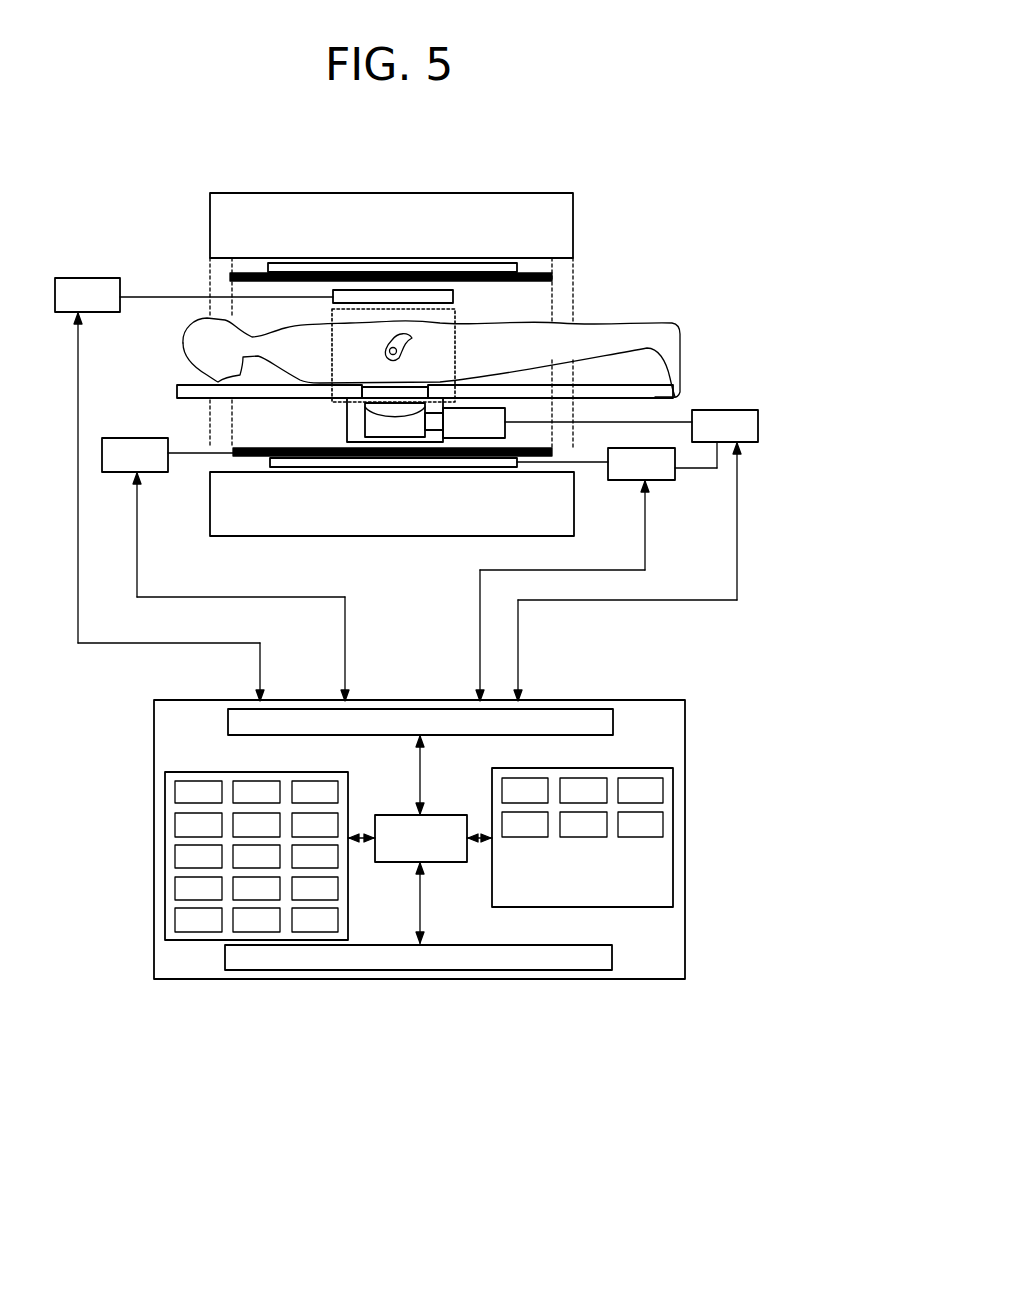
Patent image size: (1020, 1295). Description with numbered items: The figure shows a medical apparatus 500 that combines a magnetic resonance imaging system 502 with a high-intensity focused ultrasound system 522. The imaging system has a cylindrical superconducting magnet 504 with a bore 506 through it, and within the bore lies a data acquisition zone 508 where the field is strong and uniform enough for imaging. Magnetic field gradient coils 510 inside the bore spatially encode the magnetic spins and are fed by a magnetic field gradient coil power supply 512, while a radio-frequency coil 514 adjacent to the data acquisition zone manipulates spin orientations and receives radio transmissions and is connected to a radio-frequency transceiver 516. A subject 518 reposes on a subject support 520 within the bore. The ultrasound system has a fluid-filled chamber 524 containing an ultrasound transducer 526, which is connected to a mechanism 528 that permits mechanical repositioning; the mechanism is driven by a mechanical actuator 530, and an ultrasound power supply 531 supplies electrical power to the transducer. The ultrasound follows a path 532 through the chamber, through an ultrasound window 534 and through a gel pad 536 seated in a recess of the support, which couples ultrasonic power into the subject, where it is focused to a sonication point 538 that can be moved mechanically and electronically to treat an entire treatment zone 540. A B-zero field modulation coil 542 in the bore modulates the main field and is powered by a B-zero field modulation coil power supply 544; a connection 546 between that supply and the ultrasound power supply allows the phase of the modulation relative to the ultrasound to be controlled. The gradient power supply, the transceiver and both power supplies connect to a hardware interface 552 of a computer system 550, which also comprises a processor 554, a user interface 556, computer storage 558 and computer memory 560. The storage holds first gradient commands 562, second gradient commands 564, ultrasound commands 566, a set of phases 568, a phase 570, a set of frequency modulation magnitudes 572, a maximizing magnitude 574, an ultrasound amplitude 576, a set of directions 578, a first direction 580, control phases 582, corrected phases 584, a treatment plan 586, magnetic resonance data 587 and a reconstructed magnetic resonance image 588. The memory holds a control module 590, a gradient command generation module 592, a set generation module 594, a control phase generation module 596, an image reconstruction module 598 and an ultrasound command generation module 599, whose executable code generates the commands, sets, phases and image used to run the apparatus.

The medical apparatus 500 is at (763, 1013).
The magnetic resonance imaging system 502 is at (598, 136).
The magnet 504 is at (575, 212).
The bore 506 is at (618, 302).
The data acquisition zone 508 is at (362, 392).
The magnetic field gradient coils 510 is at (243, 456).
The magnetic field gradient coil power supply 512 is at (225, 569).
The radio-frequency coil 514 is at (372, 378).
The radio-frequency transceiver 516 is at (194, 489).
The subject 518 is at (183, 343).
The subject support 520 is at (177, 393).
The high-intensity focused ultrasound system 522 is at (316, 413).
The fluid-filled chamber 524 is at (360, 432).
The ultrasound transducer 526 is at (397, 425).
The mechanism 528 is at (435, 420).
The mechanical actuator 530 is at (465, 432).
The ultrasound power supply 531 is at (631, 555).
The ultrasound path 532 is at (378, 378).
The ultrasound window 534 is at (380, 408).
The gel pad 536 is at (403, 385).
The sonication point 538 is at (392, 348).
The treatment zone 540 is at (412, 378).
The B0 field modulation coil 542 is at (292, 467).
The B0 field modulation coil power supply 544 is at (596, 571).
The connection 546 is at (699, 478).
The computer system 550 is at (685, 728).
The hardware interface 552 is at (420, 722).
The processor 554 is at (420, 839).
The user interface 556 is at (418, 957).
The computer storage 558 is at (165, 816).
The computer memory 560 is at (673, 796).
The first gradient commands 562 is at (198, 792).
The second gradient commands 564 is at (256, 792).
The ultrasound commands 566 is at (315, 792).
The set of phases 568 is at (198, 825).
The phase 570 is at (256, 825).
The set of frequency modulation magnitudes 572 is at (315, 825).
The maximizing magnitude 574 is at (198, 856).
The ultrasound amplitude 576 is at (256, 856).
The set of directions 578 is at (315, 856).
The first direction 580 is at (198, 888).
The set of control phases 582 is at (256, 888).
The set of corrected phases 584 is at (315, 888).
The treatment plan 586 is at (198, 920).
The magnetic resonance data 587 is at (256, 920).
The magnetic resonance image 588 is at (315, 920).
The control module 590 is at (525, 790).
The gradient command generation module 592 is at (583, 790).
The set generation module 594 is at (640, 790).
The control phase generation module 596 is at (525, 824).
The image reconstruction module 598 is at (583, 824).
The ultrasound command generation module 599 is at (640, 824).